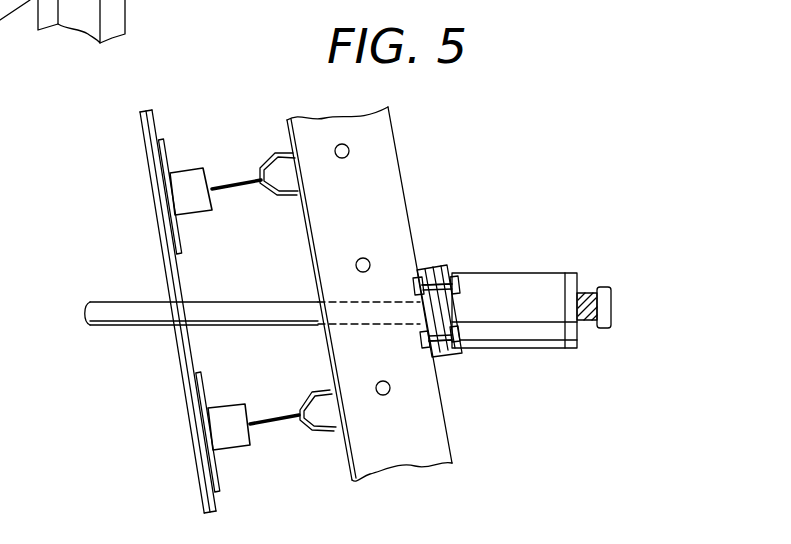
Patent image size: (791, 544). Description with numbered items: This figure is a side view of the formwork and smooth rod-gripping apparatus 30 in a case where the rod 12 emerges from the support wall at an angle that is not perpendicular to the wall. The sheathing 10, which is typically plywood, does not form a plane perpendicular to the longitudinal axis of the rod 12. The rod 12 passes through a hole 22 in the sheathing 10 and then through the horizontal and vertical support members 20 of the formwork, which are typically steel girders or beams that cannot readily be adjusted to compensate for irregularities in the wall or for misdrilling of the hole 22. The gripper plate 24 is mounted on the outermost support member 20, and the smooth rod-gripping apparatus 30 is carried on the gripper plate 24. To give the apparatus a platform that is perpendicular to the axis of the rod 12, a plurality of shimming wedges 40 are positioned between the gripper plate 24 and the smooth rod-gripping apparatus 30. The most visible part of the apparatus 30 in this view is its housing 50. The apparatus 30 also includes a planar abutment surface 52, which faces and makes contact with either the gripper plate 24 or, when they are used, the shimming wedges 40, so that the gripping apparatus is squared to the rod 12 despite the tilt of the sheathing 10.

The sheathing 10 is at (217, 497).
The rod 12 is at (110, 302).
The support members 20 is at (430, 199).
The hole 22 is at (185, 302).
The gripper plate 24 is at (445, 348).
The smooth rod-gripping apparatus 30 is at (524, 328).
The shimming wedges 40 is at (436, 246).
The housing 50 is at (537, 278).
The planar abutment surface 52 is at (452, 268).